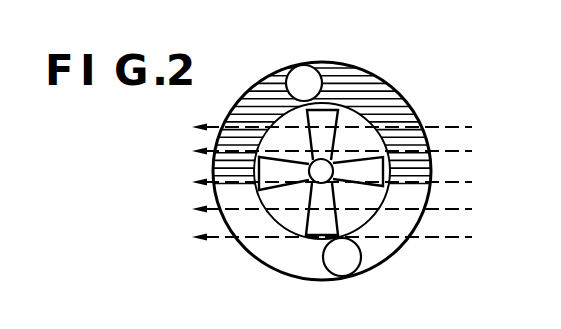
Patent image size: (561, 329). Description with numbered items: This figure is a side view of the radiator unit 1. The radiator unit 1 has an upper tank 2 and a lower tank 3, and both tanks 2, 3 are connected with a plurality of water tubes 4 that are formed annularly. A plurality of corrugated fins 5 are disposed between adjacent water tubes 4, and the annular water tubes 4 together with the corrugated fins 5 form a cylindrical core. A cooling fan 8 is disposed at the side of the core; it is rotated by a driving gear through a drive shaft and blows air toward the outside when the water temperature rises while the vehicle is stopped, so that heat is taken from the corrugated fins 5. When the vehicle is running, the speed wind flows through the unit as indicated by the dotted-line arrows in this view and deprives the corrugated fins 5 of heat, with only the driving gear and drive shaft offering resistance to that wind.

The radiator unit 1 is at (410, 77).
The upper tank 2 is at (302, 78).
The lower tank 3 is at (338, 264).
The water tube 4 is at (278, 255).
The corrugated fin 5 is at (359, 86).
The cooling fan 8 is at (375, 178).